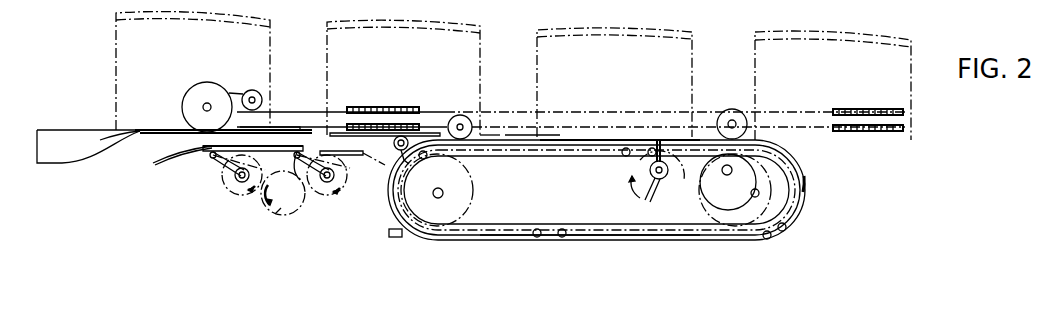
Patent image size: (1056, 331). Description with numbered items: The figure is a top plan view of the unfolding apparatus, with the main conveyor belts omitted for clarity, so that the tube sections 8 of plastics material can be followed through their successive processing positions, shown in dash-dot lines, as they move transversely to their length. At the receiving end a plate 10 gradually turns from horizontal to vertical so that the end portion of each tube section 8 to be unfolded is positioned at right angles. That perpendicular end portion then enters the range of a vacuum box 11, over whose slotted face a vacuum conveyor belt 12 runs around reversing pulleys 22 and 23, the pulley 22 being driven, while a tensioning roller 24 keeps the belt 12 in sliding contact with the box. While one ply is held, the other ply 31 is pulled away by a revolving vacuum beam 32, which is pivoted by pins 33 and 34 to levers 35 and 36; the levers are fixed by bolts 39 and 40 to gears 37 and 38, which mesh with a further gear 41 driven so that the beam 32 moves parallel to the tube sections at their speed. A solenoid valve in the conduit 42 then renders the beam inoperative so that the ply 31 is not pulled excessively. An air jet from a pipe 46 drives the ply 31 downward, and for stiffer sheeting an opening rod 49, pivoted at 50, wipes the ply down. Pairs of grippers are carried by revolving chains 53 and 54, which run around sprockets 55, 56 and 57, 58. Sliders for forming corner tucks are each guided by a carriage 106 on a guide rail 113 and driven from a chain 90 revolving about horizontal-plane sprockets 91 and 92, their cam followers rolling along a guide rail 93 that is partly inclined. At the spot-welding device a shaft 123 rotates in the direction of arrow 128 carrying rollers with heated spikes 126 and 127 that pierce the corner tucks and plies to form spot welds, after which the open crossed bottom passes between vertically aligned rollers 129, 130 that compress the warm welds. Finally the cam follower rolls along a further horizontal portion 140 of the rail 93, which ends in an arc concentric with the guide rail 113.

The tube section 8 is at (125, 48).
The plate 10 is at (62, 163).
The vacuum box 11 is at (278, 130).
The vacuum conveyor belt 12 is at (300, 127).
The reversing pulley 22 is at (185, 97).
The reversing pulley 23 is at (460, 115).
The tensioning roller 24 is at (249, 90).
The ply 31 is at (422, 133).
The vacuum beam 32 is at (213, 152).
The pin 33 is at (222, 165).
The pin 34 is at (283, 193).
The lever 35 is at (233, 190).
The lever 36 is at (303, 200).
The gear 37 is at (252, 200).
The gear 38 is at (345, 188).
The bolt 39 is at (245, 185).
The bolt 40 is at (320, 185).
The gear 41 is at (278, 218).
The conduit 42 is at (160, 160).
The pipe 46 is at (395, 148).
The opening rod 49 is at (402, 162).
The pivot 50 is at (396, 237).
The chain 53 is at (493, 125).
The chain 54 is at (522, 110).
The sprocket 55 is at (890, 131).
The sprocket 56 is at (347, 108).
The sprocket 57 is at (886, 109).
The sprocket 58 is at (371, 107).
The chain 90 is at (695, 245).
The sprocket 91 is at (410, 209).
The sprocket 92 is at (766, 209).
The guide rail 93 is at (548, 136).
The carriage 106 is at (427, 160).
The guide rail 113 is at (628, 245).
The shaft 123 is at (661, 180).
The heated spike 126 is at (648, 196).
The heated spike 127 is at (671, 176).
The arrow / spot welds 128 is at (636, 185).
The roller 129 is at (722, 110).
The roller 130 is at (700, 188).
The horizontal portion 140 is at (808, 184).